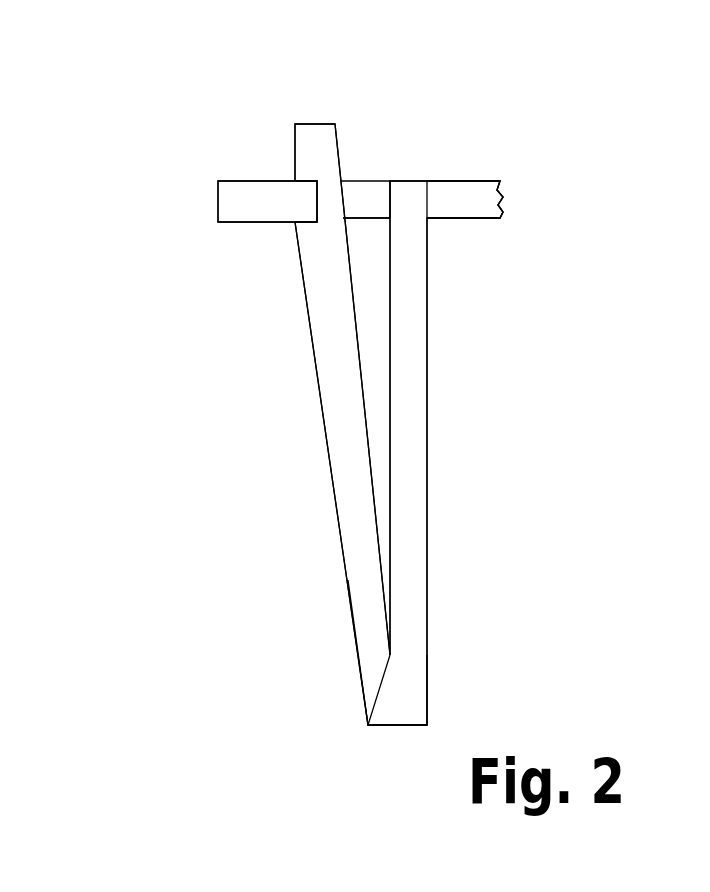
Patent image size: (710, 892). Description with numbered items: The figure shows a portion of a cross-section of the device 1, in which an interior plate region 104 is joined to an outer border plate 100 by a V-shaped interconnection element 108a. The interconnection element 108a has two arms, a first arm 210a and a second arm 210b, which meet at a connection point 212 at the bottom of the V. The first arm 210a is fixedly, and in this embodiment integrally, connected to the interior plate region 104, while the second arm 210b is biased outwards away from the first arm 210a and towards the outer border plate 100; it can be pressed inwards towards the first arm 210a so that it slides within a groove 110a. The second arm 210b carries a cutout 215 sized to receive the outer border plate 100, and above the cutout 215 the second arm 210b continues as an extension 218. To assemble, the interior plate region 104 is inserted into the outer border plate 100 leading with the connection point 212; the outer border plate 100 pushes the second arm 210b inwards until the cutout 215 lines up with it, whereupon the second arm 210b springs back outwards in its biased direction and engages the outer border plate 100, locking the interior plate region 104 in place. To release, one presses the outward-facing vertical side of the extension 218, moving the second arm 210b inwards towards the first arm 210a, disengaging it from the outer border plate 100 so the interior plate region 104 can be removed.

The device 1 is at (552, 162).
The outer border plate 100 is at (233, 193).
The interior plate region 104 is at (455, 210).
The interconnection element 108a is at (327, 638).
The groove 110a is at (362, 200).
The first arm 210a is at (408, 330).
The second arm 210b is at (333, 407).
The connection point 212 is at (398, 697).
The cutout 215 is at (313, 197).
The extension 218 is at (313, 163).